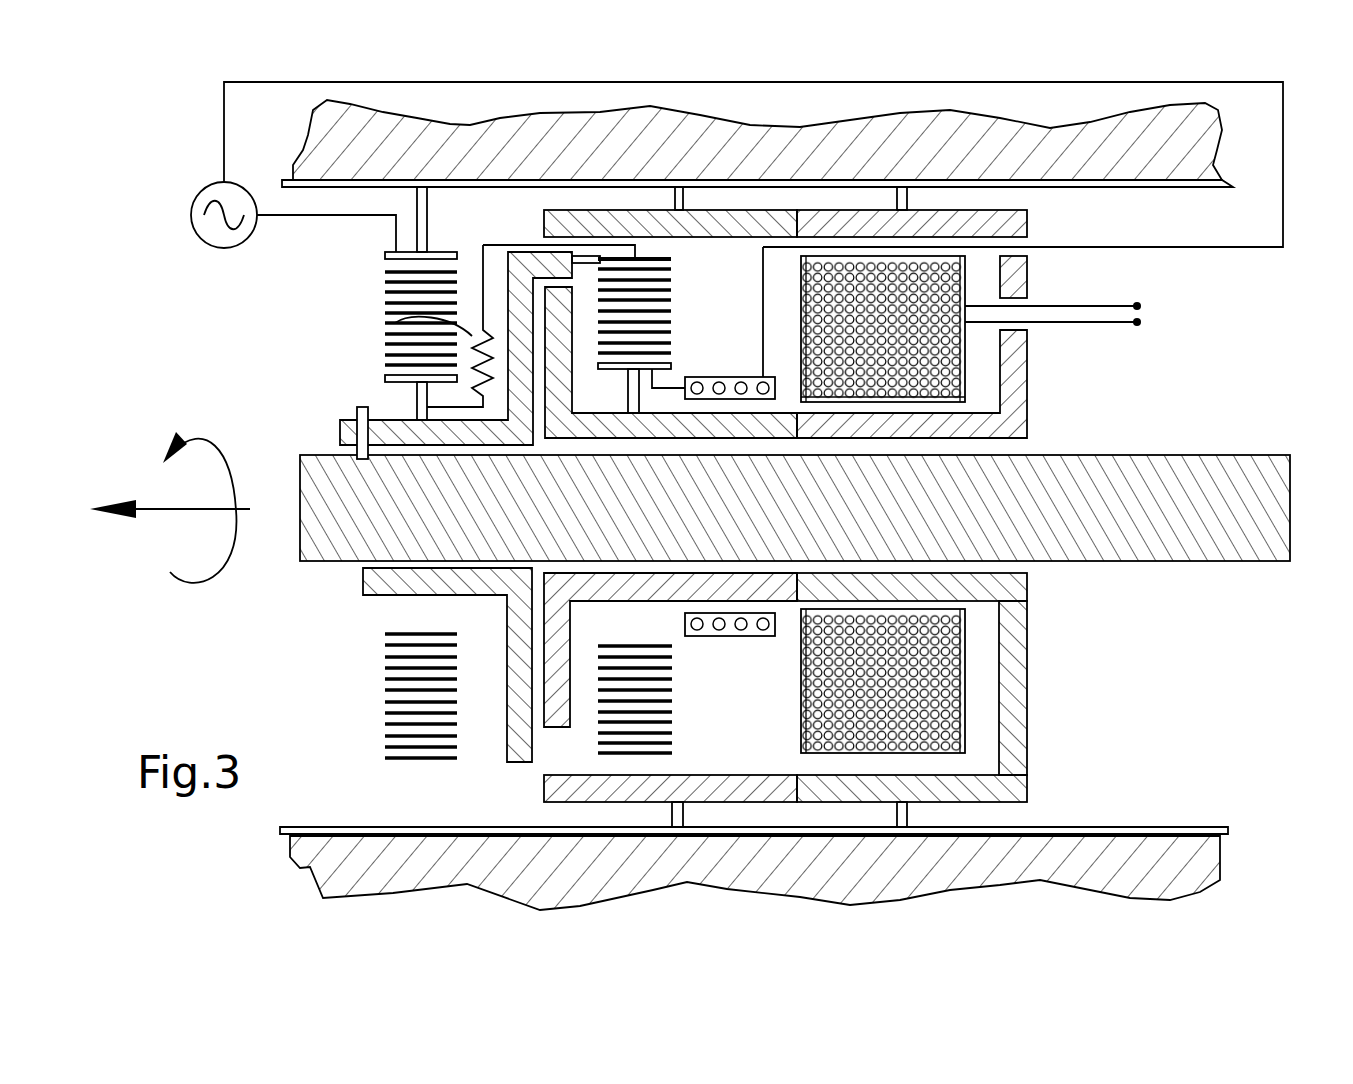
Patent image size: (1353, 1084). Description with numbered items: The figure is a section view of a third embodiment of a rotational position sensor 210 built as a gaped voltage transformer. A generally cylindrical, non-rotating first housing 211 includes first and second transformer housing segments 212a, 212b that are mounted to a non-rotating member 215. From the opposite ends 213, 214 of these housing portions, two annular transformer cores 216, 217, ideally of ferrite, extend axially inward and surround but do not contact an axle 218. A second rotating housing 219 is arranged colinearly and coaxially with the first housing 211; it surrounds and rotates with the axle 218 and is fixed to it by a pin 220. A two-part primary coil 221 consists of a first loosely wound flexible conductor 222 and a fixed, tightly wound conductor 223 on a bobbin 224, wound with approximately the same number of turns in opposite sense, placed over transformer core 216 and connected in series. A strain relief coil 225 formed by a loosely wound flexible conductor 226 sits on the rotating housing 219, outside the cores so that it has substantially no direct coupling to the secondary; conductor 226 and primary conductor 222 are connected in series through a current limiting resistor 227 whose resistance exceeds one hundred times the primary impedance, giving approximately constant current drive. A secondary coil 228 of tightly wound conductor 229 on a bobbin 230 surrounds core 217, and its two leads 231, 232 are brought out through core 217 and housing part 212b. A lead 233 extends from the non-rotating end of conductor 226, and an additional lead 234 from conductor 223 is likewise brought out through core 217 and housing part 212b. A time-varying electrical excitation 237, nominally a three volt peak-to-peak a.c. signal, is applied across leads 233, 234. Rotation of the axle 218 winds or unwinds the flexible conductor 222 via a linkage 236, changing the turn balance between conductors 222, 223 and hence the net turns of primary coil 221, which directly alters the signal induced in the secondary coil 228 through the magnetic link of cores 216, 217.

The sensor 210 is at (1272, 316).
The first housing 211 is at (1162, 720).
The first transformer housing segment 212a is at (632, 785).
The second transformer housing segment 212b is at (1010, 680).
The first end of housing portions 213 is at (298, 343).
The second end of housing portions 214 is at (1228, 382).
The non-rotating member 215 is at (775, 137).
The transformer core 216 is at (662, 590).
The transformer core 217 is at (970, 583).
The axle 218 is at (1290, 505).
The second rotating housing 219 is at (370, 597).
The pin 220 is at (357, 410).
The primary coil 221 is at (696, 350).
The first loosely wound flexible conductor 222 is at (672, 281).
The tightly wound conductor 223 is at (722, 630).
The bobbin 224 is at (697, 632).
The strain relief coil 225 is at (352, 684).
The loosely wound flexible conductor 226 is at (412, 718).
The resistor 227 is at (386, 328).
The secondary coil 228 is at (768, 705).
The tightly wound conductor 229 is at (858, 690).
The bobbin 230 is at (802, 734).
The lead 231 is at (1050, 305).
The lead 232 is at (1050, 325).
The lead 233 is at (314, 218).
The additional lead 234 is at (1053, 247).
The linkage 236 is at (457, 219).
The time-varying electrical excitation 237 is at (215, 245).